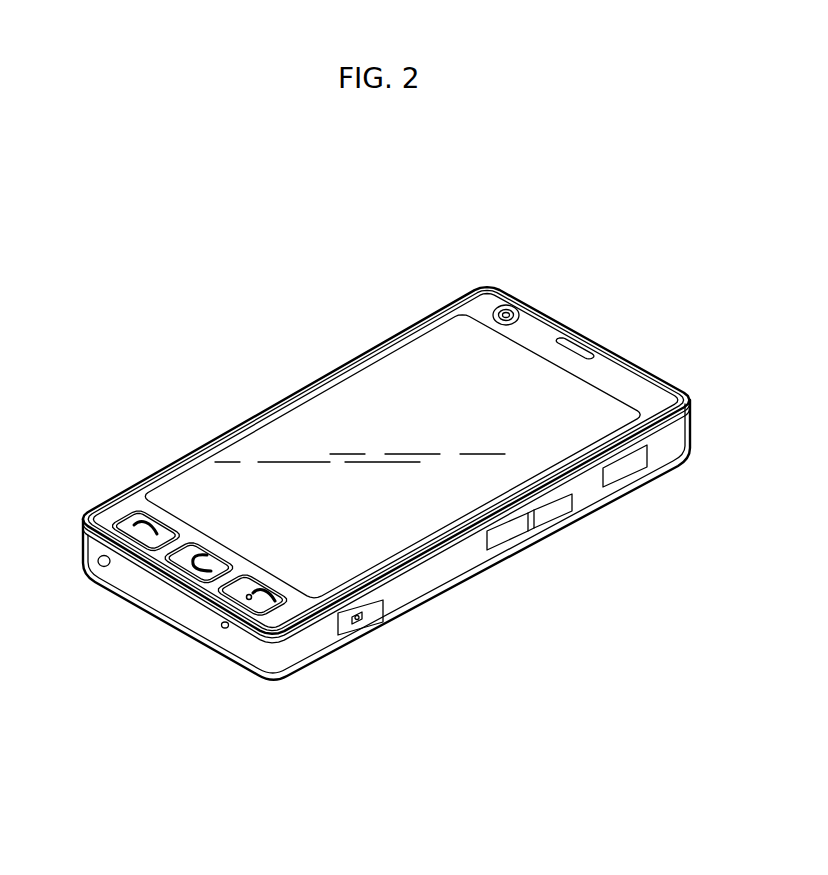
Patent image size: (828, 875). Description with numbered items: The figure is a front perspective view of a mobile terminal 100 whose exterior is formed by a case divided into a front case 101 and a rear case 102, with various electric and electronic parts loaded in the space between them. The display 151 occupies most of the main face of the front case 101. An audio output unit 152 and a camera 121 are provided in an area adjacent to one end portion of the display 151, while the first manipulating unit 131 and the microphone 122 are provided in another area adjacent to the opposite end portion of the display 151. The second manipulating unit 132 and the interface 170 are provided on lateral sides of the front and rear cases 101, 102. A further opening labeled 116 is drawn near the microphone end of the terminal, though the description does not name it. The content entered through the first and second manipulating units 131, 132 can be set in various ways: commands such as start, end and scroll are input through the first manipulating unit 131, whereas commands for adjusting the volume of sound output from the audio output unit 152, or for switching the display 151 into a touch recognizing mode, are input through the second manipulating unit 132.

The mobile terminal 100 is at (314, 319).
The front case 101 is at (250, 636).
The rear case 102 is at (300, 660).
The earphone jack 116 is at (103, 566).
The camera 121 is at (508, 308).
The microphone 122 is at (223, 628).
The first manipulating unit 131 is at (127, 520).
The second manipulating unit 132 is at (515, 540).
The display 151 is at (300, 418).
The audio output unit 152 is at (577, 348).
The interface 170 is at (627, 462).